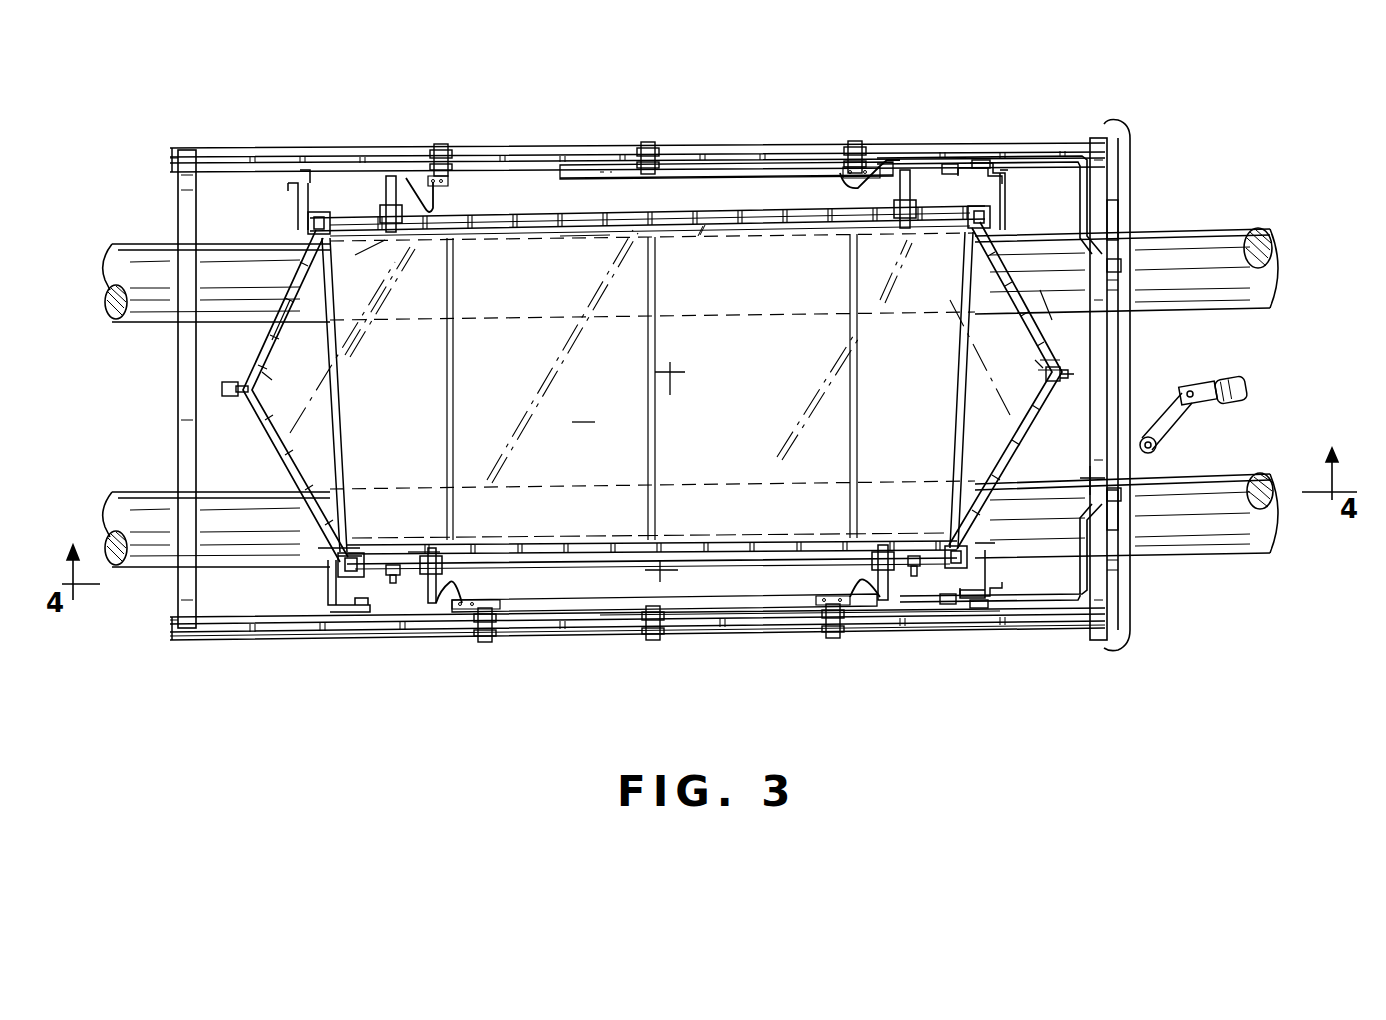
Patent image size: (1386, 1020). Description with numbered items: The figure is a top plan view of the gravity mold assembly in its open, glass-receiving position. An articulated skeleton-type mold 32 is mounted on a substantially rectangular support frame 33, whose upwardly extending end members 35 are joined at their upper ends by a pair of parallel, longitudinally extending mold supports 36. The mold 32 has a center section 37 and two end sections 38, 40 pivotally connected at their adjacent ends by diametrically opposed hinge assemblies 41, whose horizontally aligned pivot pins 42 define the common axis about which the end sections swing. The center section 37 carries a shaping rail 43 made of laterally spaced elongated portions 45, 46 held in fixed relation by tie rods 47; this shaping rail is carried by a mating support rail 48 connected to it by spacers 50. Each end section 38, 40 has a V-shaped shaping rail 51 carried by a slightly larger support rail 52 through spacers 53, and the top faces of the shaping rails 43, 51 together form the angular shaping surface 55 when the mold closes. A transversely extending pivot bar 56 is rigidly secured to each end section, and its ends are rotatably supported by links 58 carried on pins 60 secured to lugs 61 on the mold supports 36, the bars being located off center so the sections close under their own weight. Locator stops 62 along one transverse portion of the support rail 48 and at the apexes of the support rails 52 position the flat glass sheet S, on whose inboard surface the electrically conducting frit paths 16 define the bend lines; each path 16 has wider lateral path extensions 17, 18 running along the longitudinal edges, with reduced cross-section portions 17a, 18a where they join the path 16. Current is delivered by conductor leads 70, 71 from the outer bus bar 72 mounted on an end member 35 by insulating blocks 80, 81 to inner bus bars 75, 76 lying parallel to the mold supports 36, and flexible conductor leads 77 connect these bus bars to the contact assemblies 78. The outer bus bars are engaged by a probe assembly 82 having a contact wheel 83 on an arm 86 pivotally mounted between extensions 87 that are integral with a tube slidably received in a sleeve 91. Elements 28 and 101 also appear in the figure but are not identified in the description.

The electrically conducting path 16 is at (345, 428).
The lateral path extension 17 is at (385, 242).
The reduced cross-sectional portion of path extension 17a is at (325, 242).
The lateral path extension 18 is at (422, 548).
The reduced cross-sectional portion of path extension 18a is at (355, 553).
The support pipe 28 is at (1240, 236).
The skeleton-type mold 32 is at (712, 567).
The support frame 33 is at (735, 635).
The end member 35 is at (180, 365).
The mold support 36 is at (700, 150).
The center section 37 is at (760, 205).
The end section 38 is at (1030, 268).
The end section 40 is at (272, 288).
The hinge assembly 41 is at (330, 200).
The pivot pin 42 is at (308, 225).
The shaping rail 43 is at (540, 216).
The elongated portion 45 is at (596, 224).
The elongated portion 46 is at (602, 560).
The tie rod 47 is at (456, 356).
The support rail 48 is at (628, 212).
The spacer 50 is at (702, 228).
The shaping rail 51 is at (290, 352).
The support rail 52 is at (1040, 340).
The spacer 53 is at (255, 330).
The angular shaping surface 55 is at (578, 237).
The pivot bar 56 is at (328, 550).
The link 58 is at (998, 170).
The pin 60 is at (950, 165).
The lug 61 is at (978, 160).
The locator stop 62 is at (228, 396).
The conductor lead 70 is at (1030, 158).
The conductor lead 71 is at (1087, 590).
The outer bus bar 72 is at (1128, 178).
The bus bar 75 is at (783, 176).
The bus bar 76 is at (545, 613).
The flexible conductor lead 77 is at (437, 200).
The contact assembly 78 is at (388, 208).
The insulating block 80 is at (1130, 150).
The insulating block 81 is at (1112, 218).
The probe assembly 82 is at (1231, 383).
The contact wheel 83 is at (1158, 448).
The arm 86 is at (1162, 410).
The extension 87 is at (1200, 382).
The sleeve 91 is at (1248, 388).
The clamp 101 is at (442, 143).